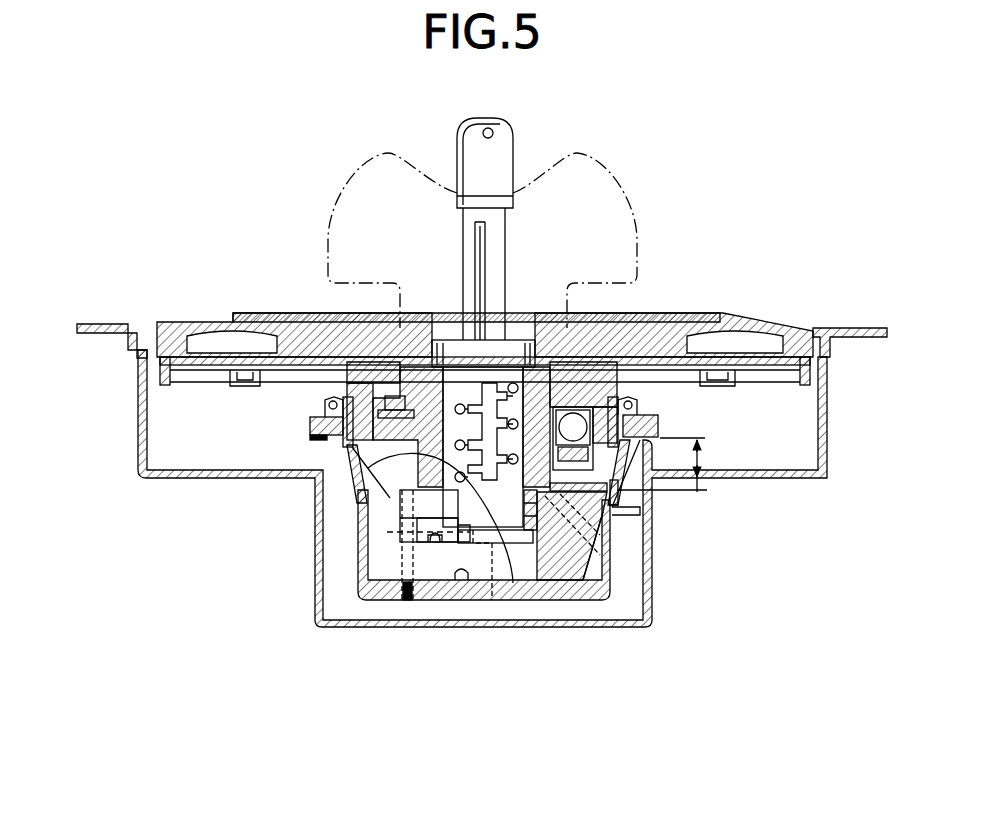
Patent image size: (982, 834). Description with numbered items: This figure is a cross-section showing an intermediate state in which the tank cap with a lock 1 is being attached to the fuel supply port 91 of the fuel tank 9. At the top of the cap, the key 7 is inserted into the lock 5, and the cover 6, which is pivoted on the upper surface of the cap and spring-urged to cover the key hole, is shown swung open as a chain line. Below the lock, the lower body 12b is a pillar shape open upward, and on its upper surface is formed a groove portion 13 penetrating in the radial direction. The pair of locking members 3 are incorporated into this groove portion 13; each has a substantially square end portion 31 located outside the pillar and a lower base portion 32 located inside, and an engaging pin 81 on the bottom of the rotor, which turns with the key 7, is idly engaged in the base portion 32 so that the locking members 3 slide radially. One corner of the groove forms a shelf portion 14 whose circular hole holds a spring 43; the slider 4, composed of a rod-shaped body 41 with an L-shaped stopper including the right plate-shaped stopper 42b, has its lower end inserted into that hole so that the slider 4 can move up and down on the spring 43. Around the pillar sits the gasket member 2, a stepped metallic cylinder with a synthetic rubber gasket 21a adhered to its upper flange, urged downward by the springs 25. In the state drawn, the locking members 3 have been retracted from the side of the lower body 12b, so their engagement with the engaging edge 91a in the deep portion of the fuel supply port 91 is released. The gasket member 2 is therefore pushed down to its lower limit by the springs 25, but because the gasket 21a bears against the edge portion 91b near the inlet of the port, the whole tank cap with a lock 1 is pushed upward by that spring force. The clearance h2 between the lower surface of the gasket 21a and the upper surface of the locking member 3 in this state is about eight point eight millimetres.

The tank cap with a lock 1 is at (722, 300).
The gasket member 2 is at (306, 415).
The locking member 3 is at (562, 588).
The slider 4 is at (396, 535).
The lock 5 is at (514, 340).
The cover 6 is at (633, 202).
The key 7 is at (505, 148).
The fuel tank 9 is at (853, 326).
The lower body 12b is at (452, 594).
The groove portion 13 is at (462, 580).
The shelf portion 14 is at (431, 545).
The gasket 21a is at (317, 450).
The spring 25 is at (350, 481).
The end portion 31 is at (573, 568).
The base portion 32 is at (528, 580).
The rod-shaped body 41 is at (407, 509).
The right plate-shaped stopper 42b is at (420, 528).
The spring 43 is at (402, 602).
The engaging pin 81 is at (492, 612).
The fuel supply port 91 is at (627, 610).
The engaging edge 91a is at (616, 504).
The edge portion 91b is at (660, 425).
The clearance h2 is at (700, 458).